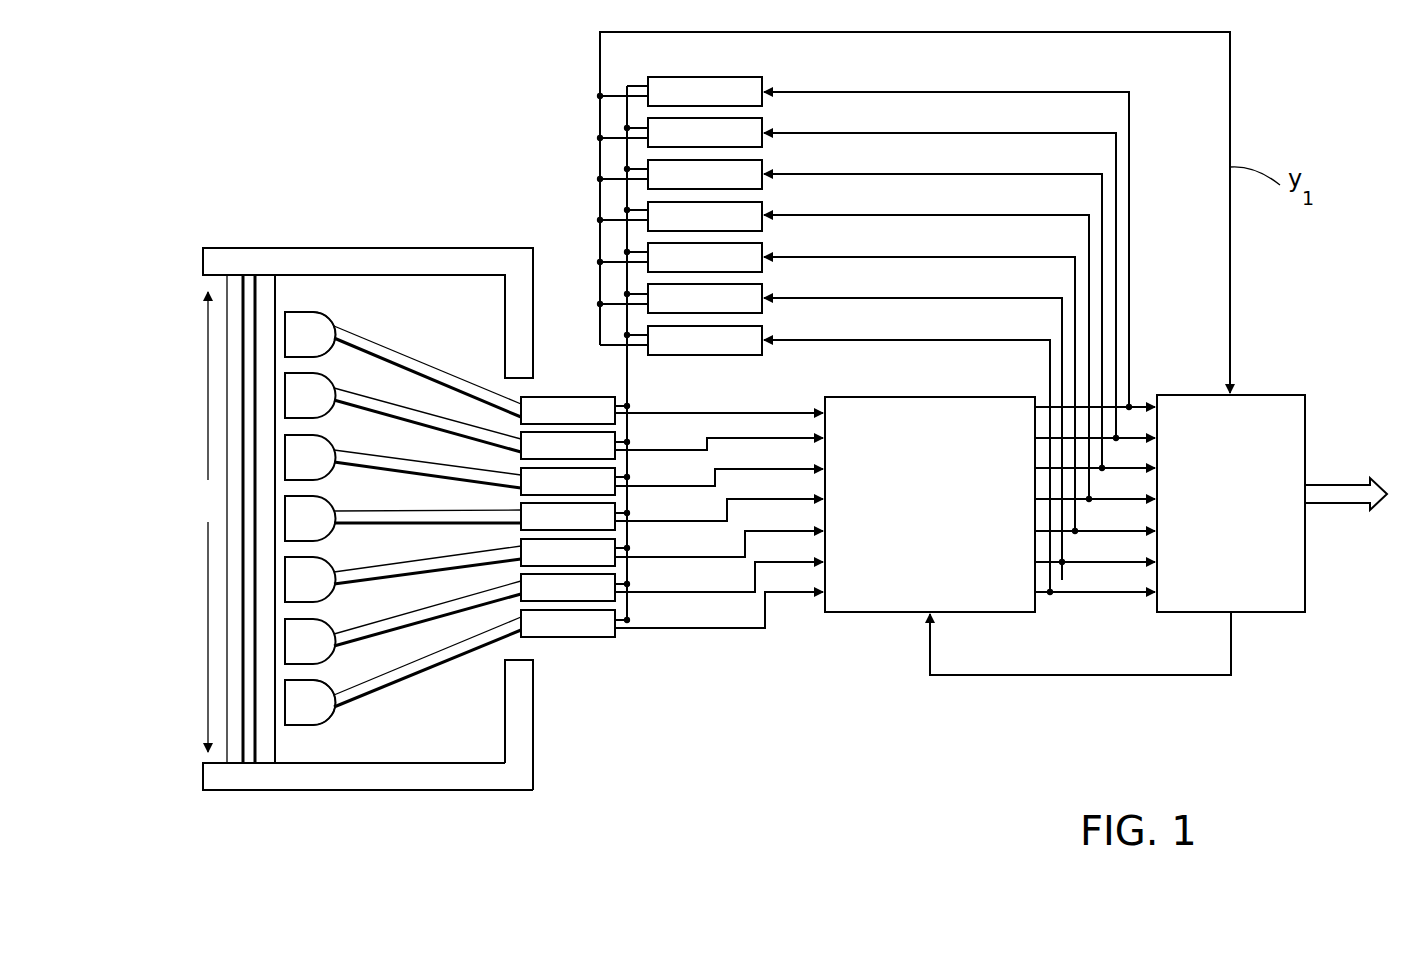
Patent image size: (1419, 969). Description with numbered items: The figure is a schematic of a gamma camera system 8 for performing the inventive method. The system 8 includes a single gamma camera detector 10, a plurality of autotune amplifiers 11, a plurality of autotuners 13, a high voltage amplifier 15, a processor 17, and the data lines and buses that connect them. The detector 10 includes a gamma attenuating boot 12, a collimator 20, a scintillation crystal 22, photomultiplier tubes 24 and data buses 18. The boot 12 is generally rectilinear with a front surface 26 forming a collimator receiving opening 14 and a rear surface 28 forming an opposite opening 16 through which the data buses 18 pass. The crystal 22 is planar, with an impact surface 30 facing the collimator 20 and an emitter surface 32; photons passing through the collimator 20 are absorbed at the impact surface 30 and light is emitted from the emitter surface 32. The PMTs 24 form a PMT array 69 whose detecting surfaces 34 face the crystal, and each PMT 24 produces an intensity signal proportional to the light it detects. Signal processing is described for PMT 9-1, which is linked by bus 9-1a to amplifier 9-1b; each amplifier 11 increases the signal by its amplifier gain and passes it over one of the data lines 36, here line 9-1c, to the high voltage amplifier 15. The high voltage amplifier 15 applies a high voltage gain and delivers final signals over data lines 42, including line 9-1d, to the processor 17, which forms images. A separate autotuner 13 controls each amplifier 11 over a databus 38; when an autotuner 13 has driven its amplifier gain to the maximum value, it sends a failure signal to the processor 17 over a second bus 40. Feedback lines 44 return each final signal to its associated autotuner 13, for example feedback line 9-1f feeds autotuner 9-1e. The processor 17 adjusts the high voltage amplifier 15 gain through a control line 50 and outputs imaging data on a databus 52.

The gamma camera system 8 is at (787, 677).
The gamma camera detector 10 is at (378, 210).
The gamma attenuating boot 12 is at (388, 783).
The collimator receiving opening 14 is at (205, 278).
The opening 16 is at (538, 383).
The data buses 18 is at (435, 423).
The collimator 20 is at (233, 567).
The scintillation crystal 22 is at (275, 280).
The photomultiplier tubes 24 is at (327, 387).
The front surface 26 is at (203, 773).
The rear surface 28 is at (538, 710).
The impact surface 30 is at (248, 438).
The emitter surface 32 is at (278, 308).
The detecting surfaces 34 is at (287, 648).
The data lines 36 is at (663, 593).
The databus 38 is at (628, 377).
The second bus 40 is at (1230, 227).
The data lines 42 is at (1113, 562).
The feedback lines 44 is at (967, 131).
The control line 50 is at (1185, 677).
The databus 52 is at (1347, 507).
The PMT array 69 is at (317, 740).
The PMT 9-1 is at (317, 317).
The bus 9-1a is at (397, 357).
The amplifier 9-1b is at (553, 395).
The line 9-1c is at (728, 412).
The line 9-1d is at (1100, 393).
The autotuner 9-1e is at (743, 76).
The feedback line 9-1f is at (1128, 113).
The autotune amplifiers 11 is at (558, 603).
The autotuners 13 is at (667, 77).
The high voltage amplifier 15 is at (887, 607).
The processor 17 is at (1307, 457).